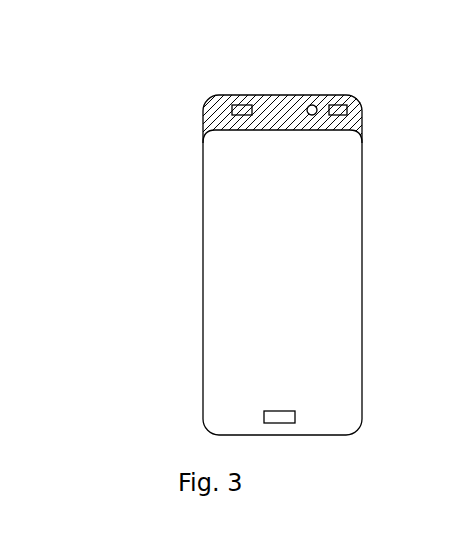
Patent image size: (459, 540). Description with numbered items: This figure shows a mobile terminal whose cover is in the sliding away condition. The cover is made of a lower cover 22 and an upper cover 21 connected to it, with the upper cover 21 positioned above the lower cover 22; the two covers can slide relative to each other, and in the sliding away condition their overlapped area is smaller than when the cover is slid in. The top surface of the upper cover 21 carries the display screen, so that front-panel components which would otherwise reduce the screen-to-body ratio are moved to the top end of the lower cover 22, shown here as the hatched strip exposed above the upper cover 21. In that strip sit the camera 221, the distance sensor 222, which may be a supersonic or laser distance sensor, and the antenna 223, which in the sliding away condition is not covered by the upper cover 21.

The upper cover 21 is at (247, 212).
The lower cover 22 is at (219, 120).
The camera 221 is at (312, 105).
The distance sensor 222 is at (337, 105).
The antenna 223 is at (242, 104).